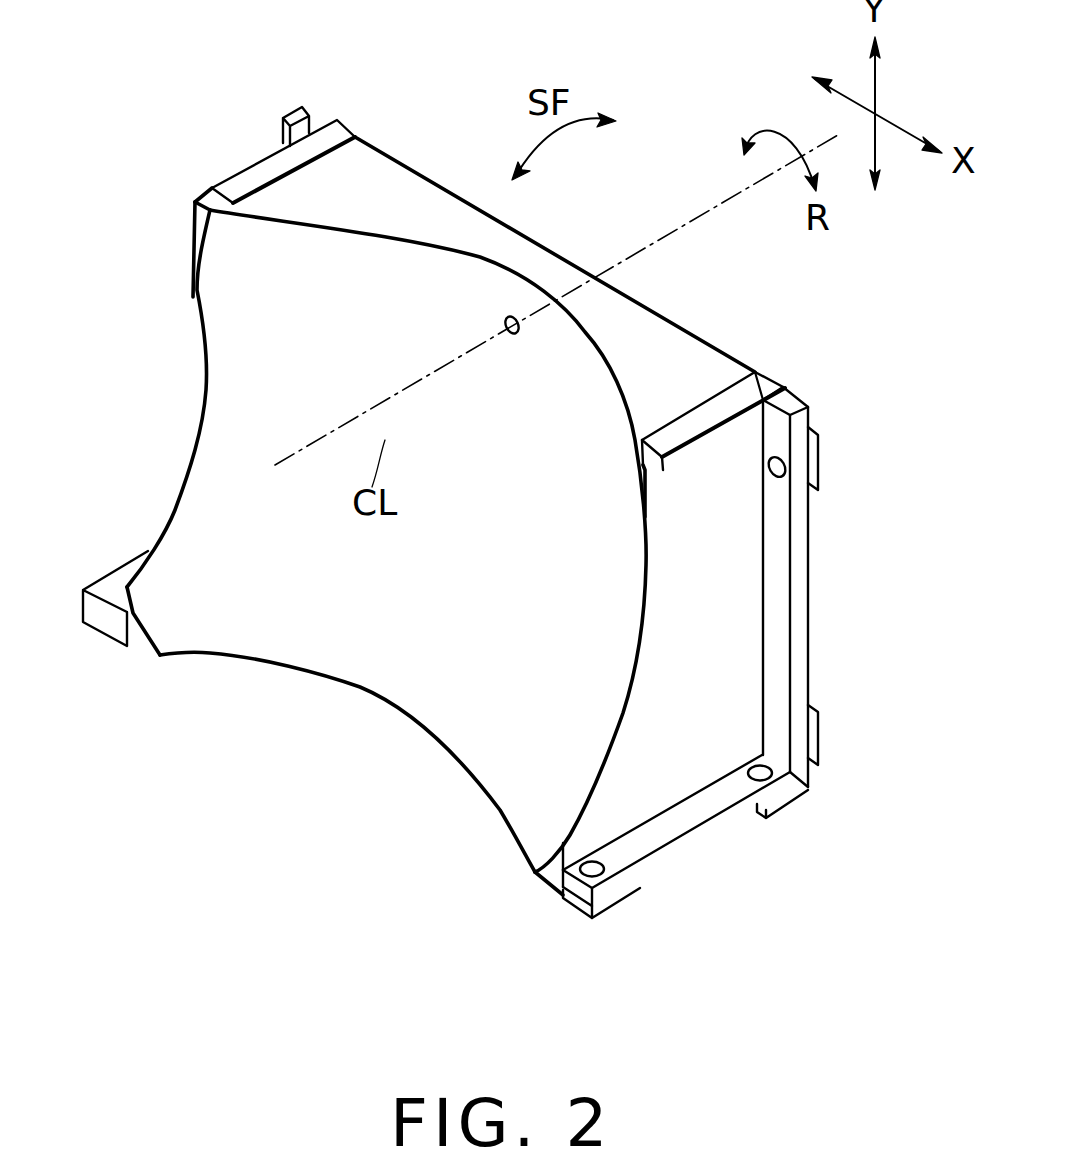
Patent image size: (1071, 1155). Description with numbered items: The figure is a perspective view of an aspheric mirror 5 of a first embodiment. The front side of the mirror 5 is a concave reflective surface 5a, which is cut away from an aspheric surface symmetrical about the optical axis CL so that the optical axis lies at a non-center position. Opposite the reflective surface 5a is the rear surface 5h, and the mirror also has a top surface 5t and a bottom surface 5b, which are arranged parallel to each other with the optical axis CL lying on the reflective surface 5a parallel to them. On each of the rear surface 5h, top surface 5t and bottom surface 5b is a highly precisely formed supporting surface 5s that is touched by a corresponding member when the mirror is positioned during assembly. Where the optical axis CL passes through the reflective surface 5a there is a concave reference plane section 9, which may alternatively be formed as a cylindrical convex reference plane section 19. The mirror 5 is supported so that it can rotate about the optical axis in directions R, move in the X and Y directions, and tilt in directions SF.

The aspheric mirror 5 is at (407, 167).
The reflective surface 5a is at (425, 600).
The top surface 5t is at (627, 330).
The rear surface 5h is at (812, 597).
The bottom surface 5b is at (687, 855).
The supporting surface 5s is at (268, 172).
The reference plane section 9 is at (388, 322).
The reference plane section 19 is at (492, 319).